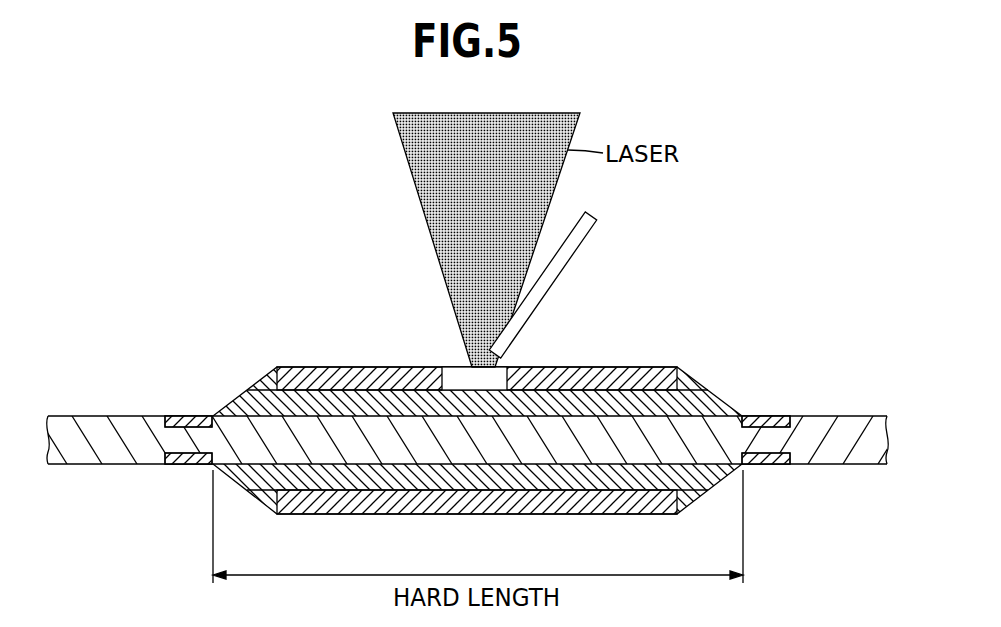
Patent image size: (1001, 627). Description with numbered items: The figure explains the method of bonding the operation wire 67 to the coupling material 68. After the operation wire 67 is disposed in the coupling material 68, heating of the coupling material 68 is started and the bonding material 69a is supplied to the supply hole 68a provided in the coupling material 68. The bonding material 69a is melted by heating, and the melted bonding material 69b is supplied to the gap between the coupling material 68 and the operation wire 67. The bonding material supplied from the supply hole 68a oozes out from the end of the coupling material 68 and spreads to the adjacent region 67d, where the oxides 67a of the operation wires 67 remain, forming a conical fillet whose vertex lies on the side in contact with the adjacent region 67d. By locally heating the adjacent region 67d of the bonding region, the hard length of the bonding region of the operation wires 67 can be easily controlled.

The operation wire 67 is at (80, 465).
The oxides 67a is at (176, 455).
The adjacent region 67d is at (212, 471).
The coupling material 68 is at (337, 367).
The supply hole 68a is at (455, 382).
The bonding material 69a is at (564, 268).
The melted bonding material 69b is at (247, 390).